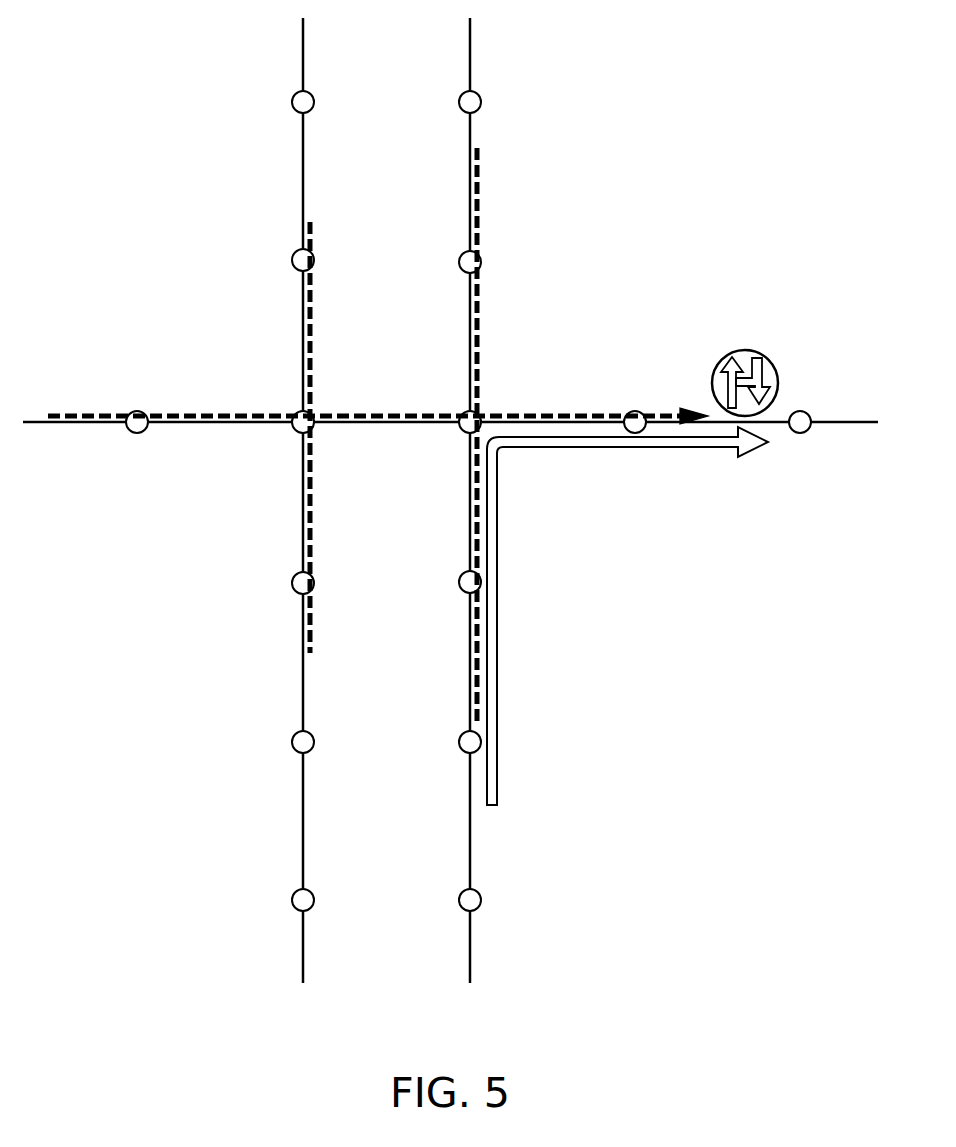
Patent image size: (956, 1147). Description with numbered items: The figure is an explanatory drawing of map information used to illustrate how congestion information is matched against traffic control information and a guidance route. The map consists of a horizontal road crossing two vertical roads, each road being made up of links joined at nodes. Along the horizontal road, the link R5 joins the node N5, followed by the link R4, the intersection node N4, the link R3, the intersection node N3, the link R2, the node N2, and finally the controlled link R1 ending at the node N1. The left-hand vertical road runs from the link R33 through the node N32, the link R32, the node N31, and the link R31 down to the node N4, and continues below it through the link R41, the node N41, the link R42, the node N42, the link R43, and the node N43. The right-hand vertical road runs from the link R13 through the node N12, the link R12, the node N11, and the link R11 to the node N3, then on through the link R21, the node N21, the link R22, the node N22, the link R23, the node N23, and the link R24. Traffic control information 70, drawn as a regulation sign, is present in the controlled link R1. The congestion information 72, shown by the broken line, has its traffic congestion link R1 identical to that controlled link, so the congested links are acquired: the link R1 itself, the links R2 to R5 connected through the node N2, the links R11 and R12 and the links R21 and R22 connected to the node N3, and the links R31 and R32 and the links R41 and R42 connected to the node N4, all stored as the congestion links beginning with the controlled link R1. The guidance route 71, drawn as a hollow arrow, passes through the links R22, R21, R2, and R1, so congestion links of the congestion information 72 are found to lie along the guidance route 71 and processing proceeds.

The link R33 is at (302, 50).
The node N32 is at (292, 103).
The traffic congestion link R32 is at (302, 170).
The node N31 is at (292, 262).
The traffic congestion link R31 is at (302, 317).
The link R13 is at (469, 62).
The node N12 is at (481, 102).
The traffic congestion link R12 is at (469, 164).
The node N11 is at (481, 262).
The traffic congestion link R11 is at (469, 308).
The traffic congestion link R41 is at (302, 512).
The node N41 is at (292, 584).
The traffic congestion link R42 is at (302, 670).
The node N42 is at (292, 743).
The link R43 is at (302, 827).
The node N43 is at (292, 902).
The traffic congestion link R21 is at (469, 511).
The node N21 is at (459, 583).
The traffic congestion link R22 is at (469, 668).
The node N22 is at (459, 743).
The link R23 is at (469, 824).
The node N23 is at (459, 902).
The link R24 is at (469, 966).
The traffic congestion link R5 is at (74, 426).
The node N5 is at (134, 411).
The traffic congestion link R4 is at (217, 426).
The node N4 is at (300, 411).
The traffic congestion link R3 is at (384, 426).
The node N3 is at (464, 411).
The traffic congestion link R2 is at (570, 427).
The node N2 is at (637, 411).
The traffic congestion link R1 is at (774, 428).
The node N1 is at (801, 411).
The traffic control information 70 is at (749, 351).
The guidance route 71 is at (498, 537).
The congestion information 72 is at (521, 382).